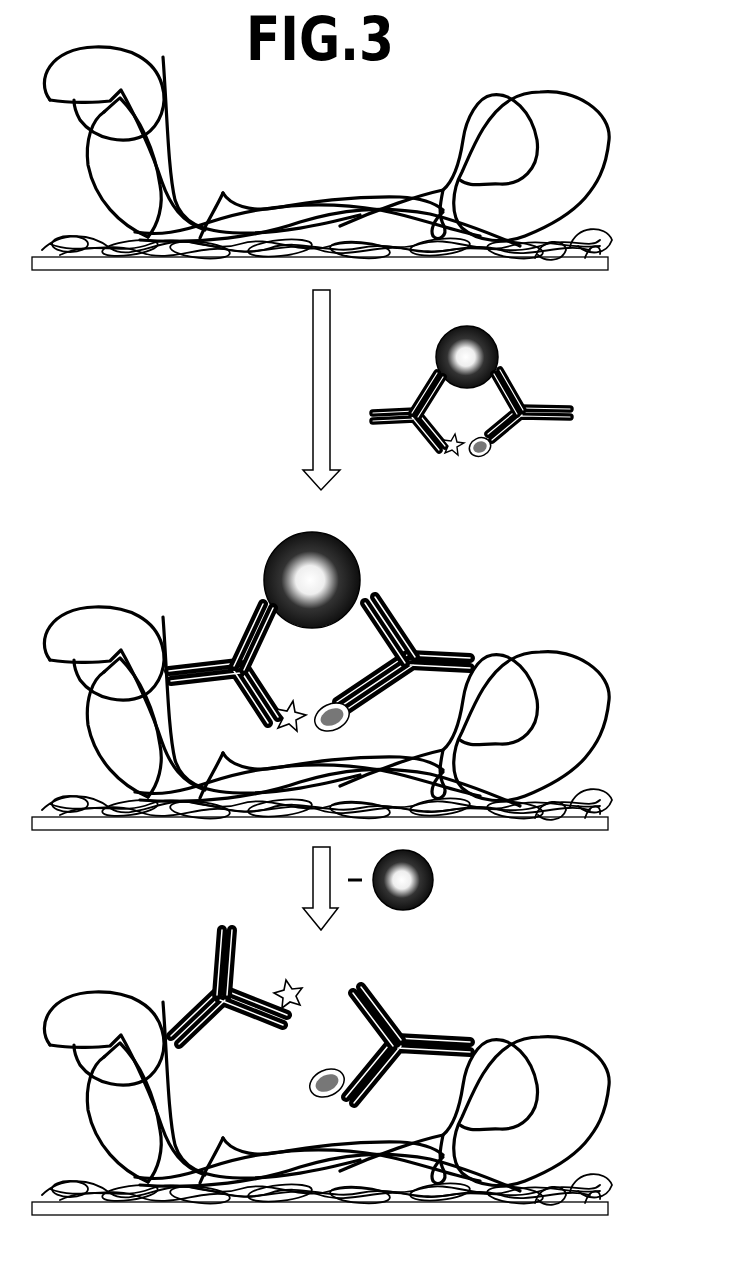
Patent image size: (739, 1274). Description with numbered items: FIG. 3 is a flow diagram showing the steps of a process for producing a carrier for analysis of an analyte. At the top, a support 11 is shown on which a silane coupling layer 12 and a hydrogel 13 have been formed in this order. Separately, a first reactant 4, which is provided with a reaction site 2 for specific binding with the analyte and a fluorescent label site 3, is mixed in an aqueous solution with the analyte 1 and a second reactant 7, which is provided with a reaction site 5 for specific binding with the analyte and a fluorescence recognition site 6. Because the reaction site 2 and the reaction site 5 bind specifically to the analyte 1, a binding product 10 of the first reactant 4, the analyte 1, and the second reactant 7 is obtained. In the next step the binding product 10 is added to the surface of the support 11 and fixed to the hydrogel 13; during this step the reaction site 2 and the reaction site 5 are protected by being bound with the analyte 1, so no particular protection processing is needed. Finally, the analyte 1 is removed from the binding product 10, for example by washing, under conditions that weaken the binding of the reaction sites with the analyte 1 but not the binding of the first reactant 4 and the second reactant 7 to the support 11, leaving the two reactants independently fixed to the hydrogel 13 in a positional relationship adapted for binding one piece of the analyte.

The analyte 1 is at (480, 330).
The reaction site 2 is at (426, 403).
The fluorescent label site 3 is at (456, 458).
The first reactant 4 is at (411, 381).
The reaction site 5 is at (500, 400).
The fluorescence recognition site 6 is at (494, 451).
The second reactant 7 is at (552, 397).
The binding product 10 is at (370, 696).
The support 11 is at (608, 262).
The silane coupling layer 12 is at (600, 227).
The hydrogel 13 is at (597, 100).